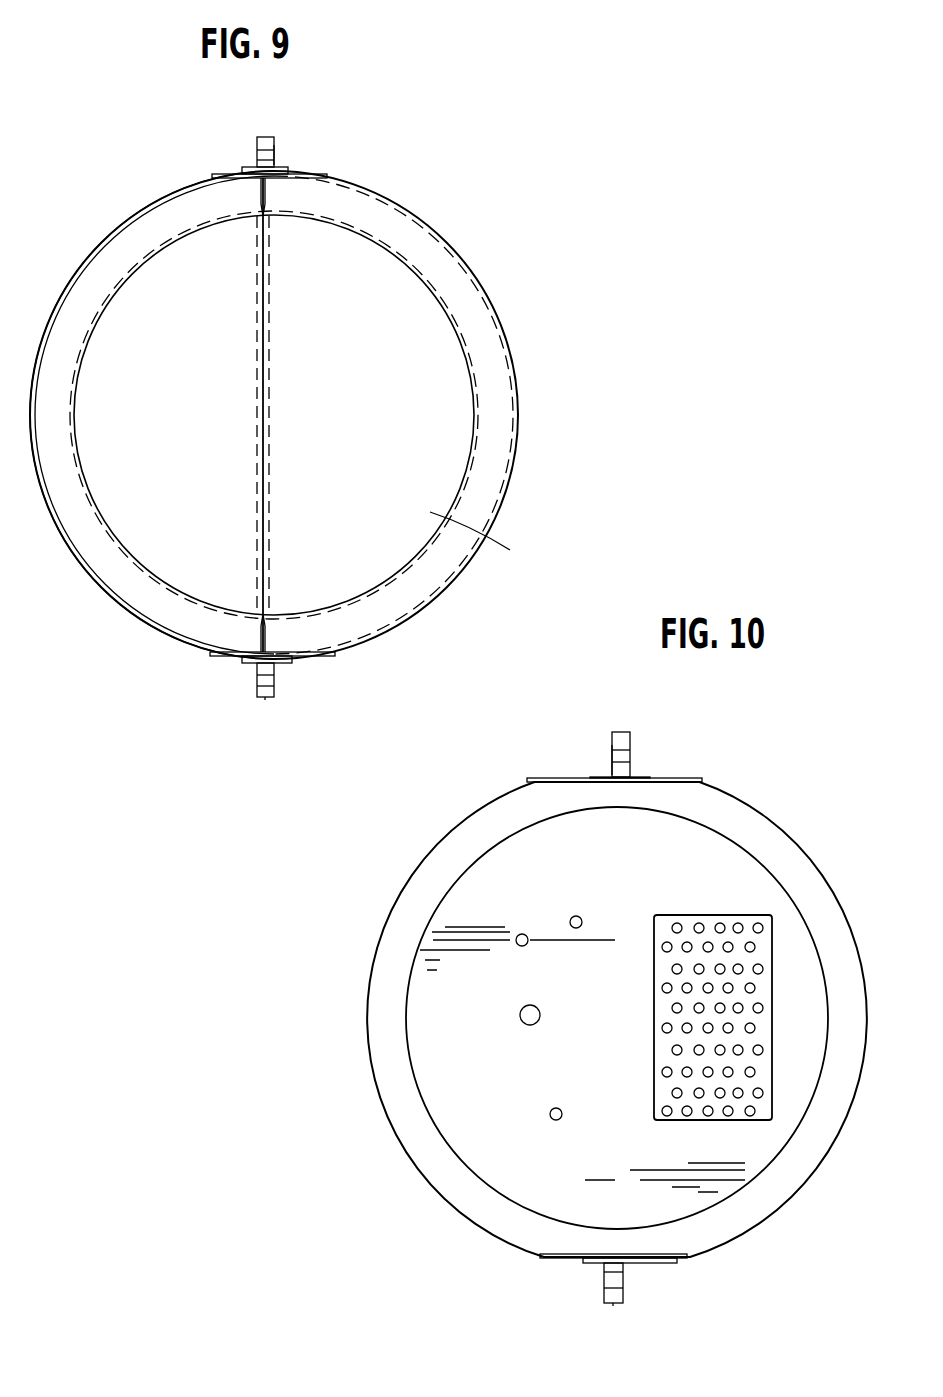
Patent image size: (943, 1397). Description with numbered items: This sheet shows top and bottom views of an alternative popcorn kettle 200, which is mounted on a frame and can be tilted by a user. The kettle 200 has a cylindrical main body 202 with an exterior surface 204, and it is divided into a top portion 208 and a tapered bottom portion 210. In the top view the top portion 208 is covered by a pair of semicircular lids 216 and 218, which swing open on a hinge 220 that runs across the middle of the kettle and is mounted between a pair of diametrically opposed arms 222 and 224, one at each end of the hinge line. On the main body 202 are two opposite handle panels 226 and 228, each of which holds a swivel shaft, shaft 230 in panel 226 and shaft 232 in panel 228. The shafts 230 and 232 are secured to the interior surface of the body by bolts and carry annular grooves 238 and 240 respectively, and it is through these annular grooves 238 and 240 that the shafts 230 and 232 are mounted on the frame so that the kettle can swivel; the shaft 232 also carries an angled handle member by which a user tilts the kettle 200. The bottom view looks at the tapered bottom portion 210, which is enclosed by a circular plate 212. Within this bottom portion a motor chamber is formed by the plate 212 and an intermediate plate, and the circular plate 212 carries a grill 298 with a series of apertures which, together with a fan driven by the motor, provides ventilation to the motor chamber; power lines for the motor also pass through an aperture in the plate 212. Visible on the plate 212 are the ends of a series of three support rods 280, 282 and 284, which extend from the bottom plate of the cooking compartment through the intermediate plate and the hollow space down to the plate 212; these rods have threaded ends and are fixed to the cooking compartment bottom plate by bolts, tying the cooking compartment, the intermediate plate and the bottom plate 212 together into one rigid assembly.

In FIG. 9, the popcorn kettle 200 is at (120, 208).
In FIG. 10, the popcorn kettle 200 is at (405, 882).
In FIG. 9, the cylindrical main body 202 is at (515, 475).
In FIG. 10, the exterior surface 204 is at (746, 1243).
In FIG. 9, the top portion 208 is at (498, 312).
In FIG. 10, the tapered bottom portion 210 is at (525, 1232).
In FIG. 10, the circular plate 212 is at (498, 1165).
In FIG. 9, the semicircular lid 216 is at (172, 563).
In FIG. 9, the semicircular lid 218 is at (497, 538).
In FIG. 9, the hinge 220 is at (263, 572).
In FIG. 9, the arm 222 is at (278, 672).
In FIG. 9, the arm 224 is at (268, 194).
In FIG. 9, the handle panel 226 is at (250, 662).
In FIG. 10, the handle panel 226 is at (636, 1263).
In FIG. 9, the handle panel 228 is at (245, 168).
In FIG. 10, the handle panel 228 is at (660, 778).
In FIG. 9, the swivel shaft 230 is at (265, 698).
In FIG. 10, the swivel shaft 230 is at (612, 1305).
In FIG. 9, the swivel shaft 232 is at (260, 136).
In FIG. 10, the swivel shaft 232 is at (622, 730).
In FIG. 9, the annular groove 238 is at (278, 690).
In FIG. 10, the annular groove 238 is at (602, 1282).
In FIG. 9, the annular groove 240 is at (275, 150).
In FIG. 10, the annular groove 240 is at (611, 760).
In FIG. 10, the support rod 280 is at (573, 916).
In FIG. 10, the support rod 282 is at (518, 936).
In FIG. 10, the support rod 284 is at (550, 1114).
In FIG. 10, the grill 298 is at (748, 920).